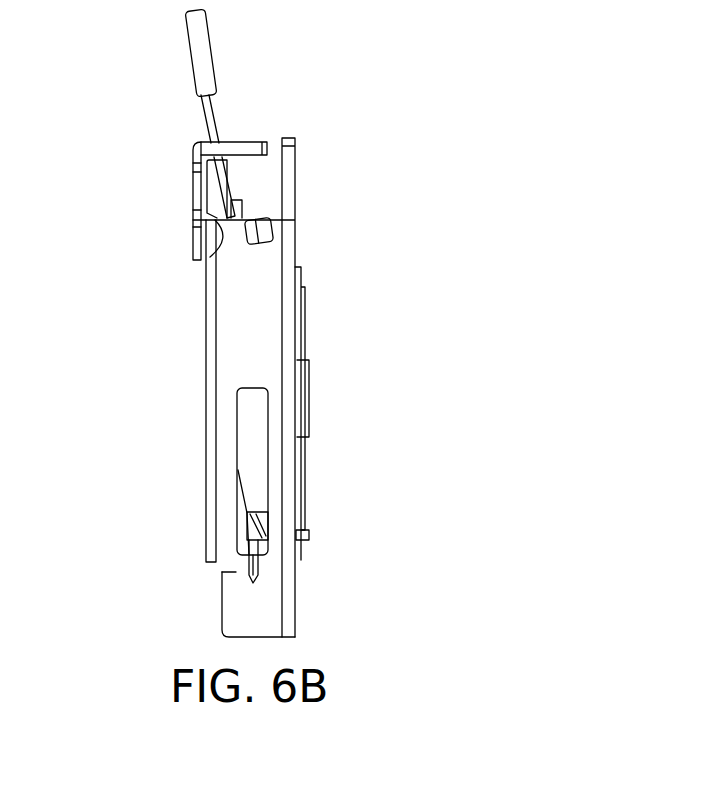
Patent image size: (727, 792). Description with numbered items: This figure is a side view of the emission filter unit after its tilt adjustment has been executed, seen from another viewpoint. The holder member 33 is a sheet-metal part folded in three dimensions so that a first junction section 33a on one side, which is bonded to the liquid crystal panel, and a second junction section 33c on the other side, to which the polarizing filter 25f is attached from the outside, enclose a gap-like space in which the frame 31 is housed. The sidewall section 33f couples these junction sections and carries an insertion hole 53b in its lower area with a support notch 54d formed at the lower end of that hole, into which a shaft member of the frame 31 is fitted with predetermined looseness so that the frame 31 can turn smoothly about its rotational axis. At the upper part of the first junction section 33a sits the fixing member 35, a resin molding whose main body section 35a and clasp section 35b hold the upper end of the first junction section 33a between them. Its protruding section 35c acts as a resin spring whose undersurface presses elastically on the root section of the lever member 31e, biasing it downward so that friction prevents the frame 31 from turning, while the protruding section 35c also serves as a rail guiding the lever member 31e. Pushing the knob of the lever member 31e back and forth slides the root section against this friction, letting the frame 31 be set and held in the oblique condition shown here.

The frame 31 is at (184, 123).
The lever member 31e is at (207, 58).
The fixing member 35 is at (173, 184).
The protruding section 35c is at (240, 153).
The main body section 35a is at (192, 210).
The clasp section 35b is at (213, 258).
The holder member 33 is at (194, 380).
The first junction section 33a is at (212, 522).
The second junction section 33c is at (292, 550).
The sidewall section 33f is at (280, 597).
The polarizing filter 25f is at (302, 310).
The insertion hole 53b is at (266, 484).
The support notch 54d is at (222, 572).